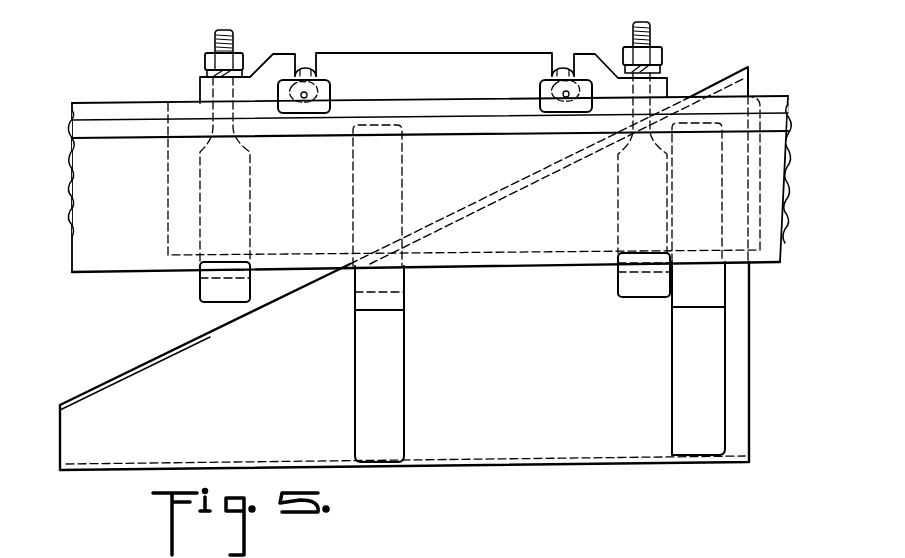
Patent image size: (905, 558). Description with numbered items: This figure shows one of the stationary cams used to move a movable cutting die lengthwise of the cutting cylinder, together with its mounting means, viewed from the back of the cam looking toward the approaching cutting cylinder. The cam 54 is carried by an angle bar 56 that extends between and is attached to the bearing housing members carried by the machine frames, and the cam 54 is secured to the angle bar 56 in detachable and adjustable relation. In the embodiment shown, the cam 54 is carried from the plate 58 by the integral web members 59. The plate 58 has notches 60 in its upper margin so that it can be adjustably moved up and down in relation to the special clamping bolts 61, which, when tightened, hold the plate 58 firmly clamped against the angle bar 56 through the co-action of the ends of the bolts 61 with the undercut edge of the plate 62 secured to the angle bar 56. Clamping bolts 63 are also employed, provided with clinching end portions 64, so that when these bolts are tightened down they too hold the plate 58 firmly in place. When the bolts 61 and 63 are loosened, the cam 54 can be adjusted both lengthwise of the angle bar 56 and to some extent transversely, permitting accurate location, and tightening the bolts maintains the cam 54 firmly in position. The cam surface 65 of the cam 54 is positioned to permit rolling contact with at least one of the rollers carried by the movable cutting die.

The cam 54 is at (156, 372).
The angle bar 56 is at (78, 203).
The plate 58 is at (452, 63).
The integral web members 59 is at (400, 188).
The notches 60 is at (300, 62).
The special clamping bolts 61 is at (330, 93).
The plate 62 is at (88, 106).
The clamping bolts 63 is at (215, 40).
The clinching end portions 64 is at (207, 290).
The cam surface 65 is at (97, 392).